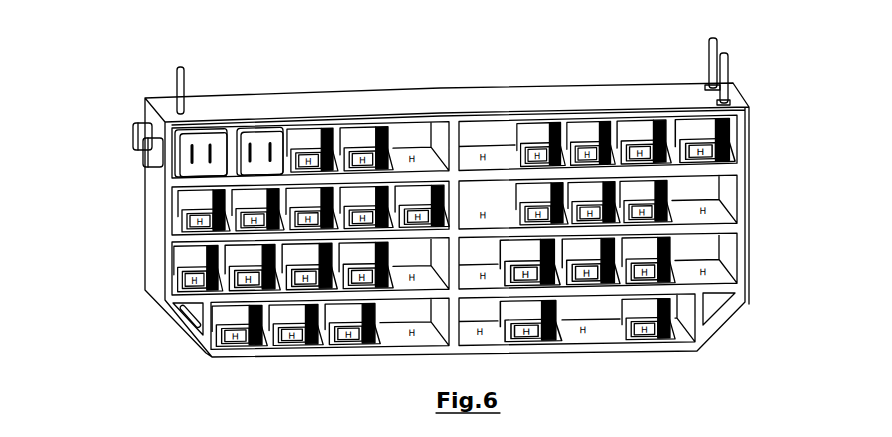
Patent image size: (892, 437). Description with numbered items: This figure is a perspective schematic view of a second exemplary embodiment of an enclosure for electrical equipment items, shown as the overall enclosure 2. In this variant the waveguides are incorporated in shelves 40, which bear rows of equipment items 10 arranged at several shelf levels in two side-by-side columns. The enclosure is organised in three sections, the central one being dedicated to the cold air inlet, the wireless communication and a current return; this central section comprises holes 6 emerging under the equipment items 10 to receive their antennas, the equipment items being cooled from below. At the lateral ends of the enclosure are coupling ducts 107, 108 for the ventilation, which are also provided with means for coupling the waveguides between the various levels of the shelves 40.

The storage rack 2 is at (318, 75).
The holes 6 is at (415, 152).
The equipment items 10 is at (263, 144).
The shelves 40 is at (467, 150).
The coupling duct 107 is at (140, 124).
The coupling duct 108 is at (141, 159).